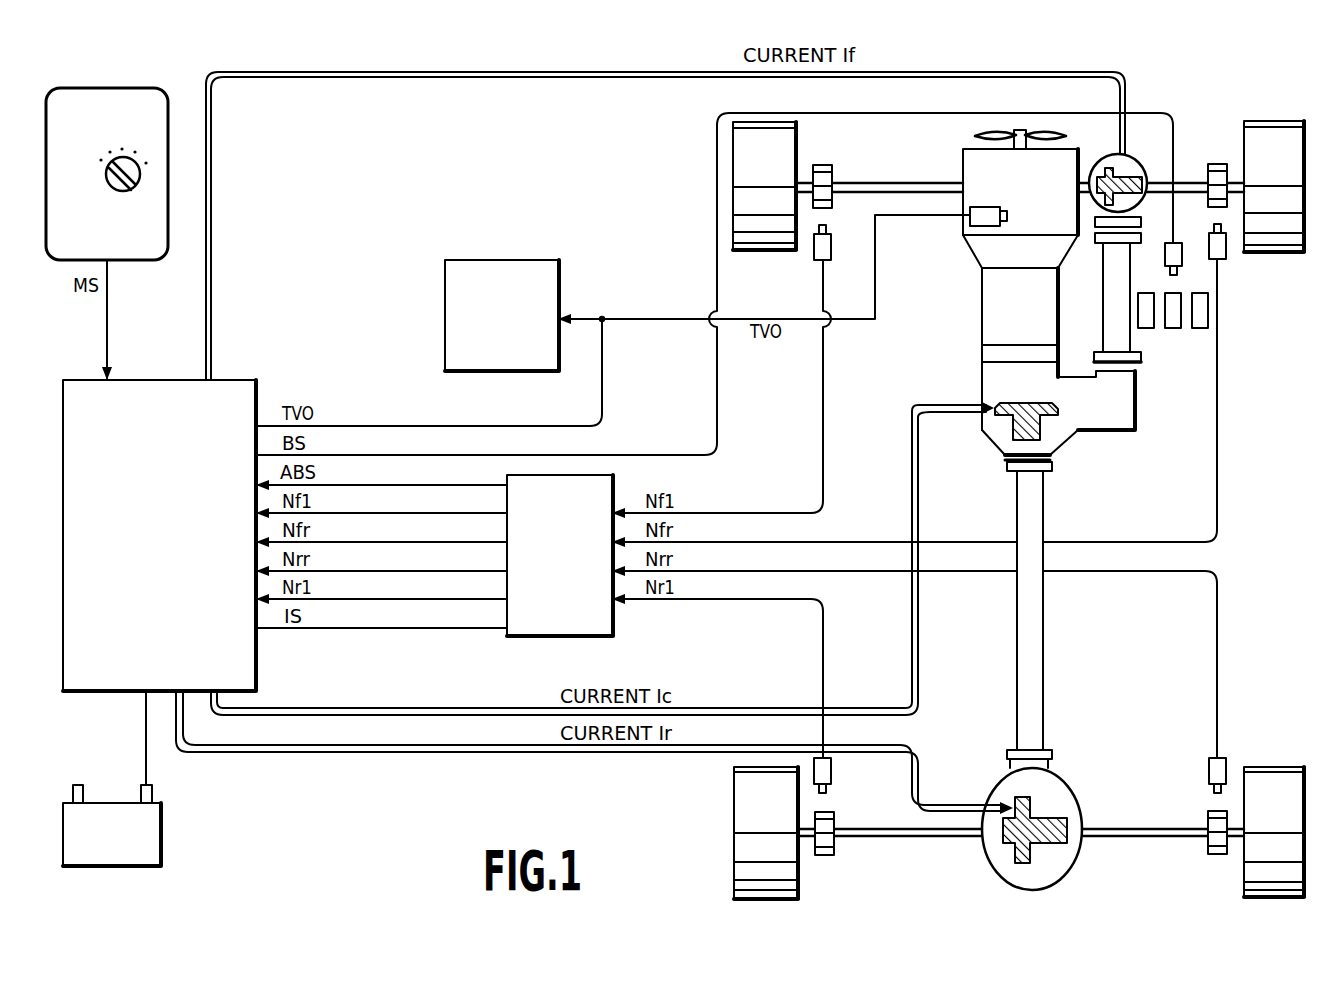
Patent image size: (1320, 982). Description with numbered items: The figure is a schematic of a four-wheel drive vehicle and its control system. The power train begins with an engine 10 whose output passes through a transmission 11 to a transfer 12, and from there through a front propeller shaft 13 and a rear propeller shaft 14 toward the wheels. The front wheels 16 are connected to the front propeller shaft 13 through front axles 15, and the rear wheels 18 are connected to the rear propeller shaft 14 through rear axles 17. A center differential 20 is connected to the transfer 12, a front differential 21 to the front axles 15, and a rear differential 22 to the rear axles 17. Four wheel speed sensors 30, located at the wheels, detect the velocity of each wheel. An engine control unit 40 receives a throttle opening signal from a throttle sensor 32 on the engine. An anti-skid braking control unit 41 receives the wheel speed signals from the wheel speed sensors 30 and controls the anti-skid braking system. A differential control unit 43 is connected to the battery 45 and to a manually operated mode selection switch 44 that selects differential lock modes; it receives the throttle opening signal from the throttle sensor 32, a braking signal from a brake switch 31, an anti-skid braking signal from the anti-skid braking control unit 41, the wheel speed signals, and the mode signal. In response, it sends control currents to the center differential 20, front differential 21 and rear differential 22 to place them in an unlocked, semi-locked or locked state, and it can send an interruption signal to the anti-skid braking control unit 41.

The engine 10 is at (970, 168).
The transmission 11 is at (984, 323).
The transfer 12 is at (1133, 398).
The front propeller shaft 13 is at (1104, 310).
The rear propeller shaft 14 is at (1040, 522).
The front axles 15 is at (858, 186).
The front wheels 16 is at (733, 175).
The rear axles 17 is at (1160, 838).
The rear wheels 18 is at (734, 825).
The center differential 20 is at (1022, 403).
The front differential 21 is at (1124, 168).
The rear differential 22 is at (1045, 815).
The wheel speed sensors 30 is at (832, 247).
The brake switch 31 is at (1183, 258).
The throttle sensor 32 is at (975, 226).
The engine control unit 40 is at (503, 260).
The anti-skid braking control unit 41 is at (613, 633).
The differential control unit 43 is at (150, 380).
The mode selection switch 44 is at (70, 88).
The battery 45 is at (161, 833).